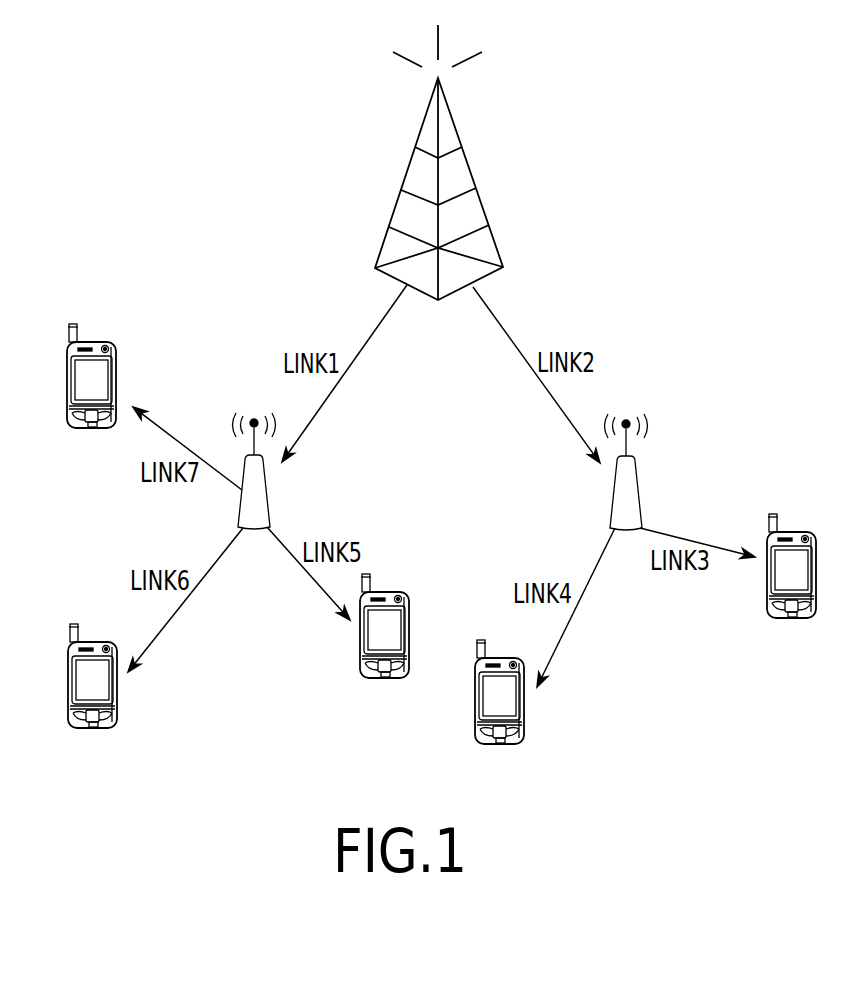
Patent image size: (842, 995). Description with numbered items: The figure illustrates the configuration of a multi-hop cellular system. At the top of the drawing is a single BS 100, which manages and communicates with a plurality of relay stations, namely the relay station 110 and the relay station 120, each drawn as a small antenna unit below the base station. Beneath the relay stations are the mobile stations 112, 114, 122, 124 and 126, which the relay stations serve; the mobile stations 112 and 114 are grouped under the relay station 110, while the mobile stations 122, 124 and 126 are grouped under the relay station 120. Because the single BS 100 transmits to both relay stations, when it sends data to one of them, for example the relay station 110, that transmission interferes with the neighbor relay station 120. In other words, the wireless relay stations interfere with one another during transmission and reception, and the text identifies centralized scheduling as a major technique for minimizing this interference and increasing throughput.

The BS 100 is at (439, 181).
The relay station 110 is at (667, 472).
The relay station 120 is at (297, 471).
The mobile station 112 is at (797, 584).
The mobile station 114 is at (504, 711).
The mobile station 122 is at (389, 646).
The mobile station 124 is at (97, 696).
The mobile station 126 is at (95, 396).